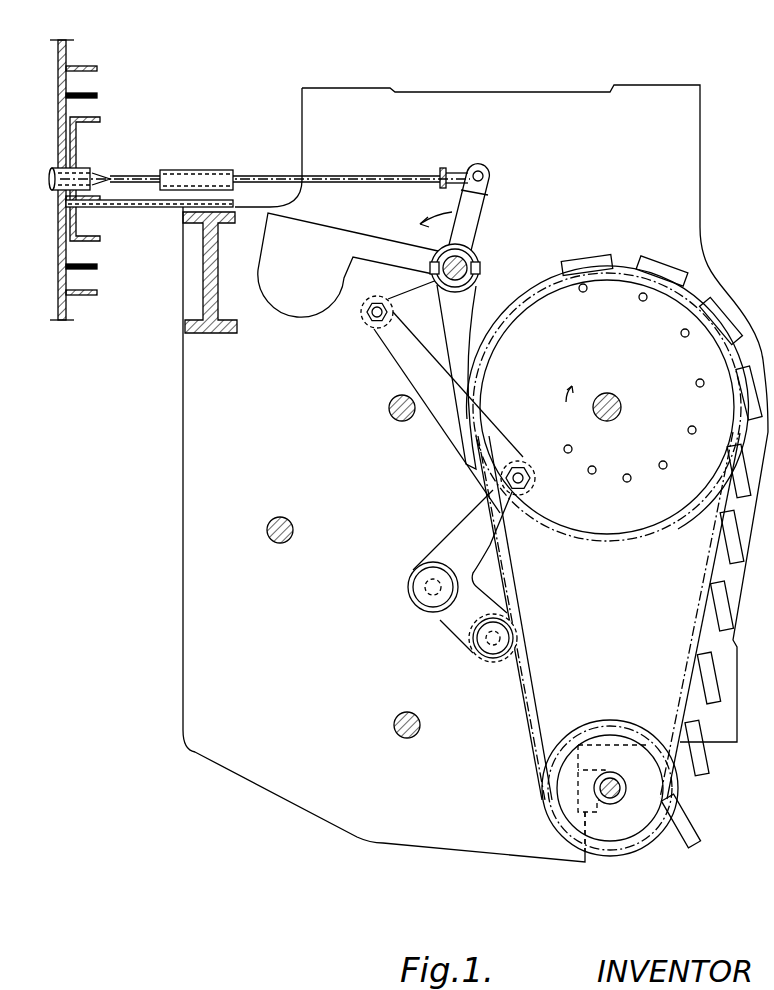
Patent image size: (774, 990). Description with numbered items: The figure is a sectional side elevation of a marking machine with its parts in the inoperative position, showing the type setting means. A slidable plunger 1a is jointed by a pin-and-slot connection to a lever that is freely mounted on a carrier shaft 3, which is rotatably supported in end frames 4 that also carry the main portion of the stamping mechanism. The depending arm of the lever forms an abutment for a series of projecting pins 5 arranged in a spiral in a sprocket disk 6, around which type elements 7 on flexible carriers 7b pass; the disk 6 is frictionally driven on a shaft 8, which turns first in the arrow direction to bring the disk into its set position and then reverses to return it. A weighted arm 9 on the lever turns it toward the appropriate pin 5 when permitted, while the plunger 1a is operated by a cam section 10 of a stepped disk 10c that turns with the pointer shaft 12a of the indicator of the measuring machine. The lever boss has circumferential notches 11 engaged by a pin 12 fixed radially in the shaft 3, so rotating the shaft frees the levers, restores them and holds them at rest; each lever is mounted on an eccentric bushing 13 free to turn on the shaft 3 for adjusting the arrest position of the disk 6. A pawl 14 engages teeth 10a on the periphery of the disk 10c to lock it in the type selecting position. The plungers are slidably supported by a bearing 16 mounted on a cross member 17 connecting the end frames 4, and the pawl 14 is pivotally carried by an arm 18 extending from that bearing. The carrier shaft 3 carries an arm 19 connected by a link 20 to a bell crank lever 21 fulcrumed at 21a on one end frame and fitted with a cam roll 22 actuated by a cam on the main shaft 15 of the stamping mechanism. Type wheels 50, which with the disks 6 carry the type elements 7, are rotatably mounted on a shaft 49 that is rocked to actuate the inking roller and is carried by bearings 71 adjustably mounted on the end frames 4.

The slidable plunger 1a is at (336, 178).
The carrier shaft 3 is at (484, 254).
The end frames 4 is at (700, 182).
The projecting pins 5 is at (684, 338).
The sprocket disks 6 is at (653, 529).
The type elements 7 is at (722, 608).
The flexible carriers 7b is at (692, 654).
The shaft 8 is at (604, 400).
The weighted arm 9 is at (376, 240).
The cam section 10 is at (97, 68).
The teeth 10a is at (68, 40).
The stepped disk 10c is at (58, 116).
The circumferential notches 11 is at (479, 265).
The pin 12 is at (481, 276).
The pointer shaft 12a is at (80, 170).
The eccentric bushing 13 is at (476, 240).
The pawl 14 is at (64, 199).
The main shaft 15 is at (410, 716).
The bearing 16 is at (170, 172).
The cross member 17 is at (214, 245).
The arm 18 is at (113, 207).
The arm 19 is at (395, 287).
The link 20 is at (392, 355).
The bell crank lever 21 is at (438, 556).
The fulcrum 21a is at (430, 589).
The cam roll 22 is at (494, 662).
The shaft 49 is at (617, 794).
The type wheels 50 is at (607, 735).
The bearings 71 is at (594, 767).